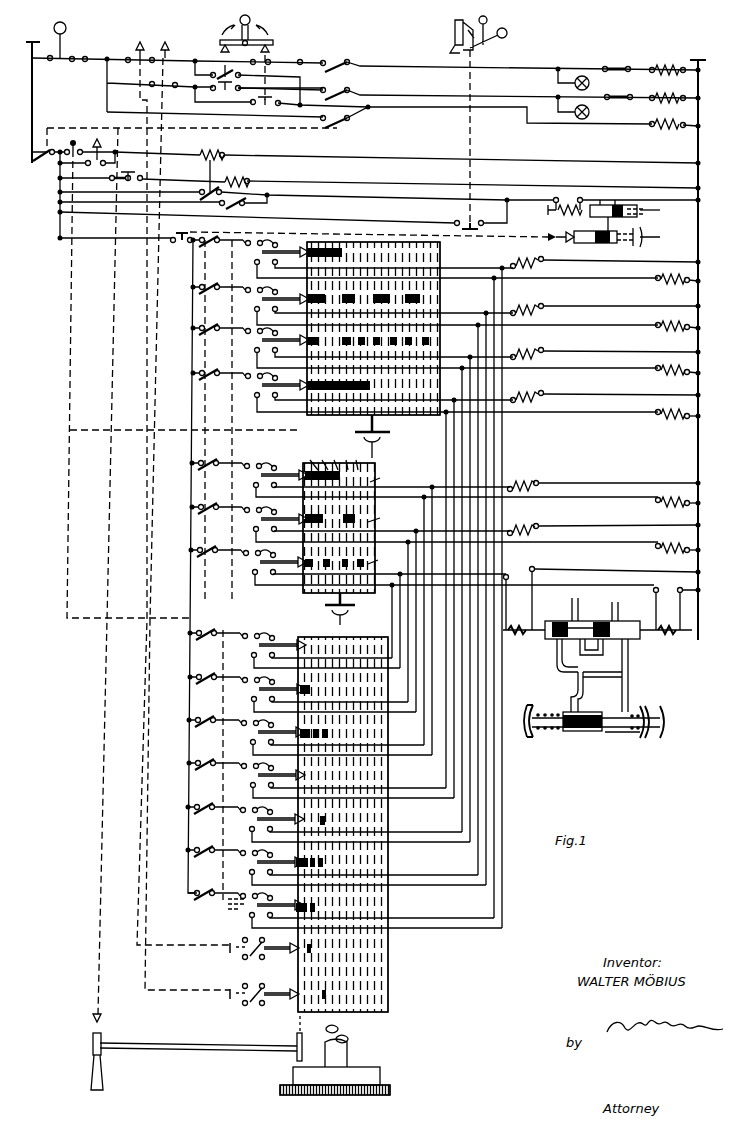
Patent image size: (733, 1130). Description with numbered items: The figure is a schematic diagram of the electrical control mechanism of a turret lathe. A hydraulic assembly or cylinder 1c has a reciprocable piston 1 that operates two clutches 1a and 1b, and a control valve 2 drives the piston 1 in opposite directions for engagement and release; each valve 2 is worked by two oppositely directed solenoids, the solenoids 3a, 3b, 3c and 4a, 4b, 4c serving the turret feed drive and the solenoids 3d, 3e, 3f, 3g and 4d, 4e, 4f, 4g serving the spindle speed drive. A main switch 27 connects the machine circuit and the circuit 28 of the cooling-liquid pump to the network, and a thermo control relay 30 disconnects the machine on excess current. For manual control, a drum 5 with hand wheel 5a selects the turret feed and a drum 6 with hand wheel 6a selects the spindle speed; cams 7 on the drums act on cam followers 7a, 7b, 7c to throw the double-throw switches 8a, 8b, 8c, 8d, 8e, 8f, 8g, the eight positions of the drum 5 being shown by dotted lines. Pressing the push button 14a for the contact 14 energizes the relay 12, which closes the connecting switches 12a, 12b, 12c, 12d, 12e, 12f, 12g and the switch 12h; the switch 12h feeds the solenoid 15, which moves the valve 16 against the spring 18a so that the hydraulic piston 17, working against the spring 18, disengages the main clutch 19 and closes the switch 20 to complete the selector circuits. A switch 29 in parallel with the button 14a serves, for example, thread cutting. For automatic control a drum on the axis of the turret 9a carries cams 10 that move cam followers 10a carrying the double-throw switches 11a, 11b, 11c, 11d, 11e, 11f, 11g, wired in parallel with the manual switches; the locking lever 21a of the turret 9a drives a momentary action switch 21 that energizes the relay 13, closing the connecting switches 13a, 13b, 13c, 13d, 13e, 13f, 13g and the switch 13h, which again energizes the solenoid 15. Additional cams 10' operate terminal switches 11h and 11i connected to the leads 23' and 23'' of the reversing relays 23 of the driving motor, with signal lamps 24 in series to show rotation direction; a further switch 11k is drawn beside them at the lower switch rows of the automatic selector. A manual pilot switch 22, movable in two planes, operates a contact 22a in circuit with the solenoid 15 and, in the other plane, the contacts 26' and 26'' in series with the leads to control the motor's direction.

The reciprocable piston 1 is at (596, 732).
The clutch 1a is at (530, 740).
The clutch 1b is at (667, 722).
The hydraulic assembly or cylinder 1c is at (620, 738).
The control valve 2 is at (552, 642).
The solenoid 3a is at (518, 636).
The solenoid 3b is at (603, 535).
The solenoid 3c is at (603, 492).
The solenoid 3d is at (605, 402).
The solenoid 3e is at (605, 359).
The solenoid 3f is at (605, 315).
The solenoid 3g is at (605, 268).
The solenoid 4a is at (669, 624).
The solenoid 4b is at (656, 545).
The solenoid 4c is at (656, 499).
The solenoid 4d is at (656, 411).
The solenoid 4e is at (656, 367).
The solenoid 4f is at (656, 323).
The solenoid 4g is at (656, 276).
The selector drum 5 is at (372, 590).
The hand wheel 5a is at (350, 610).
The selector drum 6 is at (400, 392).
The hand wheel 6a is at (380, 440).
The cam 7 is at (303, 578).
The cam follower 7a is at (256, 577).
The cam follower 7b is at (256, 534).
The cam follower 7c is at (256, 490).
The double-throw switch 8a is at (445, 567).
The double-throw switch 8b is at (447, 524).
The double-throw switch 8c is at (447, 480).
The double-throw switch 8d is at (447, 392).
The double-throw switch 8e is at (447, 348).
The double-throw switch 8f is at (447, 306).
The double-throw switch 8g is at (447, 259).
The turret 9a is at (378, 1073).
The cam 10 is at (353, 824).
The additional cam 10' is at (347, 989).
The cam follower 10a is at (230, 994).
The double-throw switch 11a is at (331, 737).
The double-throw switch 11b is at (323, 694).
The double-throw switch 11c is at (315, 650).
The double-throw switch 11d is at (252, 916).
The double-throw switch 11e is at (358, 867).
The double-throw switch 11f is at (350, 824).
The double-throw switch 11g is at (342, 780).
The terminal switch 11h is at (165, 40).
The terminal switch 11i is at (140, 40).
The relay contact 11k is at (255, 1001).
The relay 12 is at (212, 148).
The connecting switch 12a is at (216, 560).
The connecting switch 12b is at (217, 517).
The connecting switch 12c is at (217, 473).
The connecting switch 12d is at (218, 383).
The connecting switch 12e is at (218, 338).
The connecting switch 12f is at (218, 297).
The connecting switch 12g is at (218, 250).
The switch 12h is at (203, 190).
The relay 13 is at (240, 183).
The connecting switch 13a is at (214, 730).
The connecting switch 13b is at (215, 687).
The connecting switch 13c is at (215, 643).
The connecting switch 13d is at (213, 905).
The connecting switch 13e is at (213, 860).
The connecting switch 13f is at (213, 817).
The connecting switch 13g is at (214, 773).
The switch 13h is at (260, 207).
The contact 14 is at (73, 140).
The push button 14a is at (361, 544).
The solenoid 15 is at (565, 198).
The valve 16 is at (612, 206).
The hydraulic piston 17 is at (596, 243).
The spring 18 is at (636, 232).
The spring 18a is at (663, 210).
The main clutch 19 is at (656, 238).
The switch 20 is at (548, 236).
The momentary action switch 21 is at (130, 176).
The locking lever 21a is at (92, 1043).
The manual multi-position pilot switch 22 is at (516, 33).
The contact 22a is at (468, 236).
The reversing relay 23 is at (644, 72).
The lead 23' is at (520, 64).
The lead 23'' is at (522, 92).
The signal lamp 24 is at (582, 105).
The contact 26' is at (259, 72).
The contact 26'' is at (246, 71).
The main switch 27 is at (345, 118).
The circuit of the pump for cooling liquid 28 is at (668, 128).
The switch 29 is at (97, 137).
The thermo control relay 30 is at (66, 26).